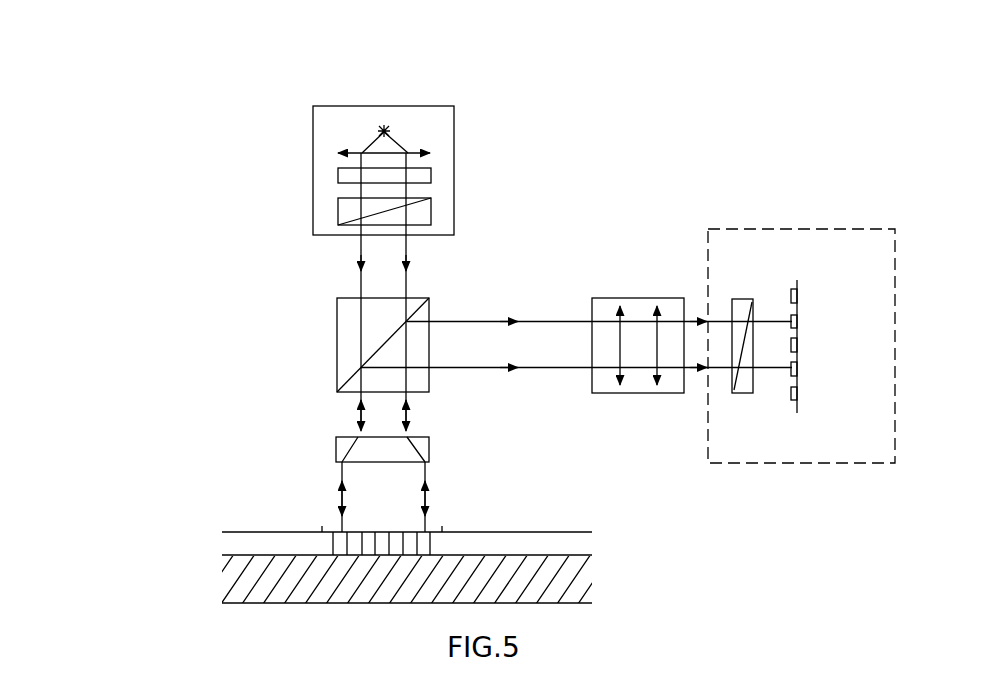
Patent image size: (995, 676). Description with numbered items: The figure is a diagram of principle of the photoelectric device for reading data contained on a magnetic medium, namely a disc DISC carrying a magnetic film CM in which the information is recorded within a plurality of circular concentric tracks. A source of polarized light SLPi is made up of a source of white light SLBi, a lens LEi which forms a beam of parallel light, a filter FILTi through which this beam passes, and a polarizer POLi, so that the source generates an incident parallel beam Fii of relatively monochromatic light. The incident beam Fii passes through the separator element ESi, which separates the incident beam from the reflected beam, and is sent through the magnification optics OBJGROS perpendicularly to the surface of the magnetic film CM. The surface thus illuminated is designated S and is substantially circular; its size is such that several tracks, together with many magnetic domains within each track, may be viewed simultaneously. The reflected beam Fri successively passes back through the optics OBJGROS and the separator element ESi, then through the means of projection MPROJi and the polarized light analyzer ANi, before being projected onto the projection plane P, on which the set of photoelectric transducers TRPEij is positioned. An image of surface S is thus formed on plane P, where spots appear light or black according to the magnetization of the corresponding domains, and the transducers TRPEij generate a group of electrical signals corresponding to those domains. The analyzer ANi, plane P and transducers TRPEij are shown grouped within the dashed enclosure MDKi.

The source of polarized light SLPi is at (455, 154).
The source of white light SLBi is at (383, 125).
The lens LEi is at (416, 151).
The filter FILTi is at (338, 175).
The polarizer POLi is at (338, 213).
The incident beam Fii is at (407, 272).
The separator element ESi is at (363, 345).
The reflected beam Fri is at (576, 414).
The means of projection MPROJi is at (600, 298).
The detection module MDKi is at (765, 228).
The light analyzer ANi is at (736, 298).
The projection plane P is at (797, 291).
The photoelectric transducers TRPEij is at (800, 394).
The magnification optics OBJGROS is at (430, 453).
The illuminated surface S is at (337, 531).
The magnetic film CM is at (572, 544).
The disc DISC is at (592, 598).